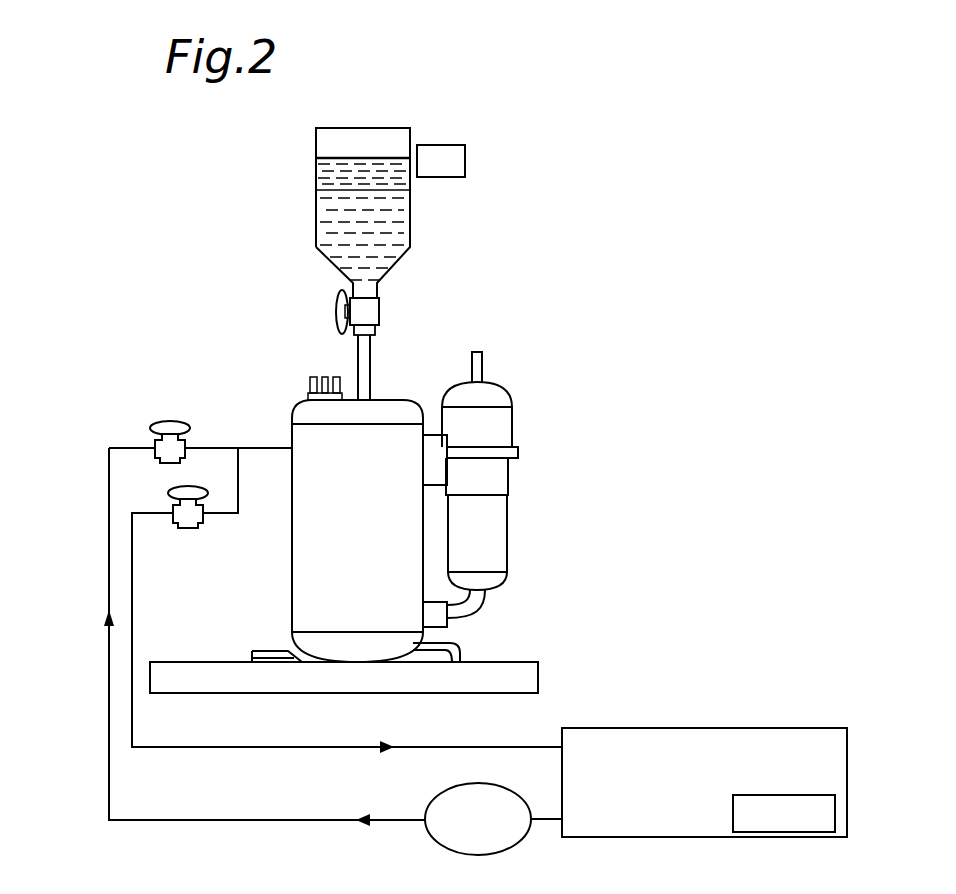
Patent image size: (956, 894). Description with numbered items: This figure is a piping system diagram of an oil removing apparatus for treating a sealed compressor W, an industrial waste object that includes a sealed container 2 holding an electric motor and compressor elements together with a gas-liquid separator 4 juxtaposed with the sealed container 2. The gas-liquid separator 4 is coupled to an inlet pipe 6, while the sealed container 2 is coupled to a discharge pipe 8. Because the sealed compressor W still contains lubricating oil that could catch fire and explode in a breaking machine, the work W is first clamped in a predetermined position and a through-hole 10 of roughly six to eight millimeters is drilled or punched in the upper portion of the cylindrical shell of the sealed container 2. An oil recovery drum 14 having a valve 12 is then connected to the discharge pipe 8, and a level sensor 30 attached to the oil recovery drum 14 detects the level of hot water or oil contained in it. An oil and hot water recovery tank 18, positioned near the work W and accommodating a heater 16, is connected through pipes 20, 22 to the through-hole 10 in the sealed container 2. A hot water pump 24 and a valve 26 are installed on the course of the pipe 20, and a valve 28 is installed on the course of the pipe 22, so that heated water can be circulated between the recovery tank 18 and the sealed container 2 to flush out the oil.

The sealed container 2 is at (292, 590).
The gas-liquid separator 4 is at (507, 532).
The inlet pipe 6 is at (482, 366).
The discharge pipe 8 is at (368, 386).
The through-hole 10 is at (292, 450).
The valve 12 is at (334, 312).
The oil recovery drum 14 is at (410, 133).
The heater 16 is at (778, 795).
The oil and hot water recovery tank 18 is at (607, 728).
The pipe 20 is at (207, 820).
The pipe 22 is at (207, 747).
The hot water pump 24 is at (468, 783).
The valve 26 is at (168, 420).
The valve 28 is at (182, 486).
The level sensor 30 is at (465, 160).
The sealed compressor W is at (522, 424).